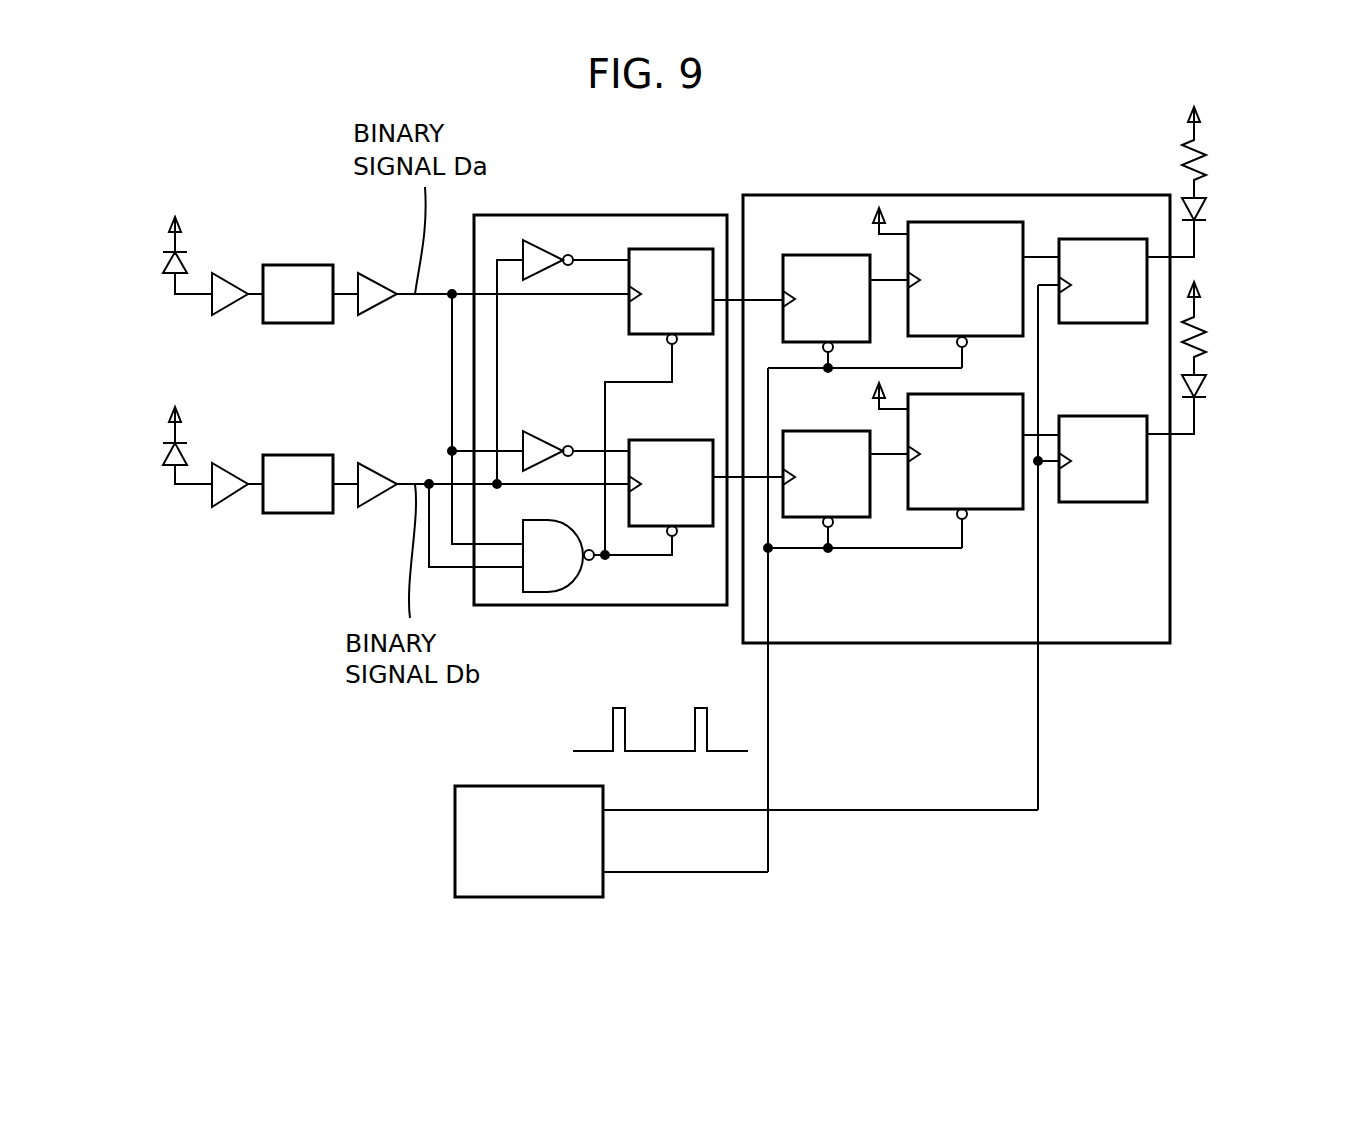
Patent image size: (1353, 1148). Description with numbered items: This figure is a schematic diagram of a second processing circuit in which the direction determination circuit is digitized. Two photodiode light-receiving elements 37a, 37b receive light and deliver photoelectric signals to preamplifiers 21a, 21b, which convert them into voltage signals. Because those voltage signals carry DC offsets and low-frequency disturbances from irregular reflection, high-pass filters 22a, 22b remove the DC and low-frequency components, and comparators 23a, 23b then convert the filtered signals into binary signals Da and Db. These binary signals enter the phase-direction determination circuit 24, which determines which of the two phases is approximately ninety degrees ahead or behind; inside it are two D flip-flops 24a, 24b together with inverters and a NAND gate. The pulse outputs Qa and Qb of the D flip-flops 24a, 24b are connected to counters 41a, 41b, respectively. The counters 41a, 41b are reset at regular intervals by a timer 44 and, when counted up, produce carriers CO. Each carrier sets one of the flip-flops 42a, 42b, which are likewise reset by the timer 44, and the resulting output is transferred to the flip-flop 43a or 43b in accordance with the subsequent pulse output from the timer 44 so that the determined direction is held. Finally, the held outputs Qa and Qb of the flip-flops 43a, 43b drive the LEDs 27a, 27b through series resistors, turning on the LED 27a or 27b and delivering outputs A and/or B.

The light-receiving element 37a is at (168, 262).
The light-receiving element 37b is at (168, 450).
The preamplifier 21a is at (228, 273).
The preamplifier 21b is at (228, 497).
The high-pass filter 22a is at (298, 265).
The high-pass filter 22b is at (298, 513).
The comparator 23a is at (375, 273).
The comparator 23b is at (375, 497).
The phase-direction determination circuit 24 is at (566, 215).
The D flip-flop 24a is at (700, 334).
The D flip-flop 24b is at (700, 526).
The counter 41a is at (800, 255).
The counter 41b is at (800, 431).
The flip-flop 42a is at (960, 222).
The flip-flop 42b is at (1000, 509).
The flip-flop 43a is at (1103, 239).
The flip-flop 43b is at (1103, 502).
The LED 27a is at (1200, 210).
The LED 27b is at (1200, 388).
The timer 44 is at (529, 897).